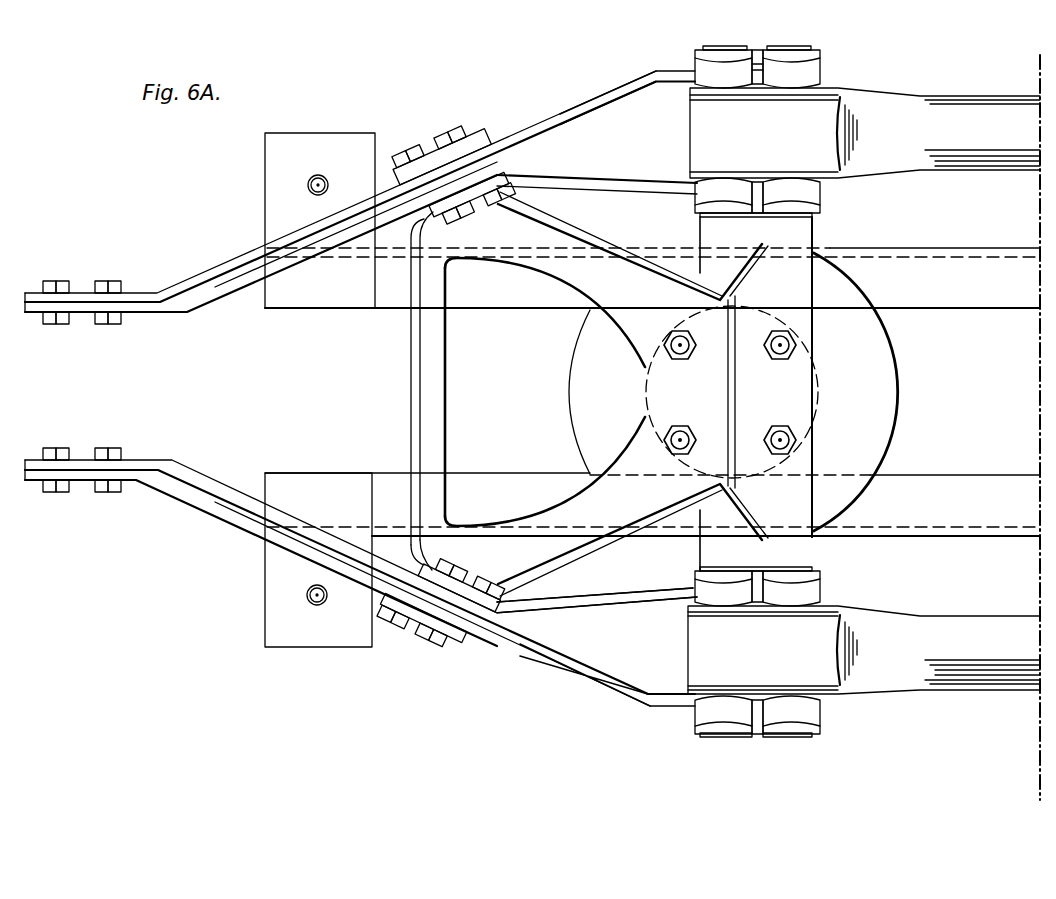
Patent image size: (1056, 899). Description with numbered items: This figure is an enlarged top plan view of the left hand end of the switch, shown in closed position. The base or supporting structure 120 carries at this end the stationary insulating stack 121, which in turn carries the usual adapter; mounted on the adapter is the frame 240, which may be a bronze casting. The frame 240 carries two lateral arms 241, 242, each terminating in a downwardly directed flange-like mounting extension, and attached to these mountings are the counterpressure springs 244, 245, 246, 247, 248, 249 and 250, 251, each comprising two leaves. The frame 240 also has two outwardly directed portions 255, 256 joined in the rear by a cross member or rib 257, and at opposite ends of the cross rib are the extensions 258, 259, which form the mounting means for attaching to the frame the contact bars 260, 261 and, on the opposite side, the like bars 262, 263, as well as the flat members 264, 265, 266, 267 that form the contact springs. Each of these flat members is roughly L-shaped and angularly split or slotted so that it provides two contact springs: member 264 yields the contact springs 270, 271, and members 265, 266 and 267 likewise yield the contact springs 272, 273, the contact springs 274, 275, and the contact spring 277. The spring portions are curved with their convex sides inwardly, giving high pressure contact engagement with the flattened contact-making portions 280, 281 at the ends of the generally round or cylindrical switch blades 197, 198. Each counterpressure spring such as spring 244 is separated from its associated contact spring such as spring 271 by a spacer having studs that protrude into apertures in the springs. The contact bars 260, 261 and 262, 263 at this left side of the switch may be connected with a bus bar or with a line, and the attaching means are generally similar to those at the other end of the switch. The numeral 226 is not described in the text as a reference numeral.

The base or supporting structure 120 is at (340, 305).
The stationary insulating stack 121 is at (883, 427).
The switch blade 197 is at (978, 690).
The switch blade 198 is at (988, 102).
The bushing 226 is at (704, 70).
The frame 240 is at (827, 404).
The lateral arm 241 is at (830, 540).
The lateral arm 242 is at (820, 228).
The counterpressure spring 244 is at (790, 738).
The counterpressure spring 245 is at (717, 738).
The counterpressure spring 246 is at (836, 572).
The counterpressure spring 247 is at (718, 582).
The counterpressure spring 248 is at (786, 214).
The counterpressure spring 249 is at (720, 206).
The counterpressure spring 250 is at (790, 50).
The counterpressure spring 251 is at (714, 50).
The outwardly directed portion 255 is at (562, 496).
The outwardly directed portion 256 is at (560, 290).
The cross member or rib 257 is at (447, 382).
The extension 258 is at (472, 568).
The extension 259 is at (470, 216).
The contact bar 260 is at (226, 530).
The contact bar 261 is at (200, 494).
The contact bar 262 is at (224, 305).
The contact bar 263 is at (214, 272).
The flat member 264 is at (537, 657).
The flat member 265 is at (583, 613).
The flat member 266 is at (580, 177).
The flat member 267 is at (584, 110).
The contact spring 270 is at (694, 716).
The contact spring 271 is at (812, 712).
The contact spring 272 is at (704, 605).
The contact spring 273 is at (790, 606).
The contact spring 274 is at (700, 180).
The contact spring 275 is at (810, 192).
The contact spring 277 is at (812, 70).
The flattened contact-making portion 280 is at (838, 657).
The flattened contact-making portion 281 is at (702, 142).